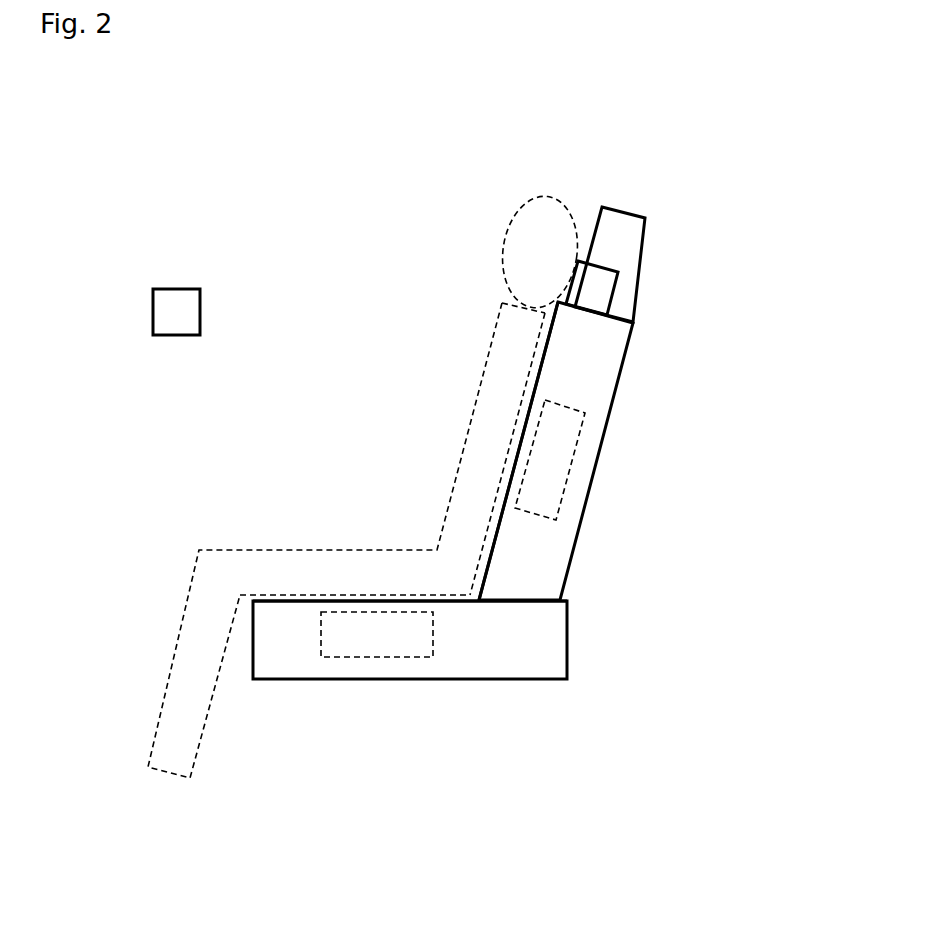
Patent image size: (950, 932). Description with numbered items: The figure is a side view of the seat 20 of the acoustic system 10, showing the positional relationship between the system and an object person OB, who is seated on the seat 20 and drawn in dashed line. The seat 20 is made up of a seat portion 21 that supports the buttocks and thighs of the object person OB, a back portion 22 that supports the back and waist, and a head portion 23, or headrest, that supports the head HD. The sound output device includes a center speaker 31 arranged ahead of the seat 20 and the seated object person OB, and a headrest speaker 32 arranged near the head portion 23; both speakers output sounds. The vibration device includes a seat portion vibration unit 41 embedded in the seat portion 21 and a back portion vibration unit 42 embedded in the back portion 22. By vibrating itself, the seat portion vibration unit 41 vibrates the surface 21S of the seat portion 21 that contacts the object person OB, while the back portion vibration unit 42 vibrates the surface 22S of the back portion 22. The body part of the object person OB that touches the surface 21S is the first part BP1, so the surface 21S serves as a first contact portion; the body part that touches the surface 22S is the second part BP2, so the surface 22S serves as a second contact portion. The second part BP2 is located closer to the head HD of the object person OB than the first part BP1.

The acoustic system 10 is at (200, 150).
The seat 20 is at (800, 225).
The seat portion 21 is at (540, 636).
The back portion 22 is at (598, 372).
The head portion 23 is at (633, 235).
The center speaker 31 is at (177, 305).
The headrest speaker 32 is at (592, 289).
The seat portion vibration unit 41 is at (377, 645).
The back portion vibration unit 42 is at (555, 457).
The surface of the seat portion 21S is at (280, 602).
The surface of the back portion 22S is at (537, 380).
The first part BP1 is at (367, 580).
The second part BP2 is at (500, 437).
The object person OB is at (500, 203).
The head HD is at (522, 247).